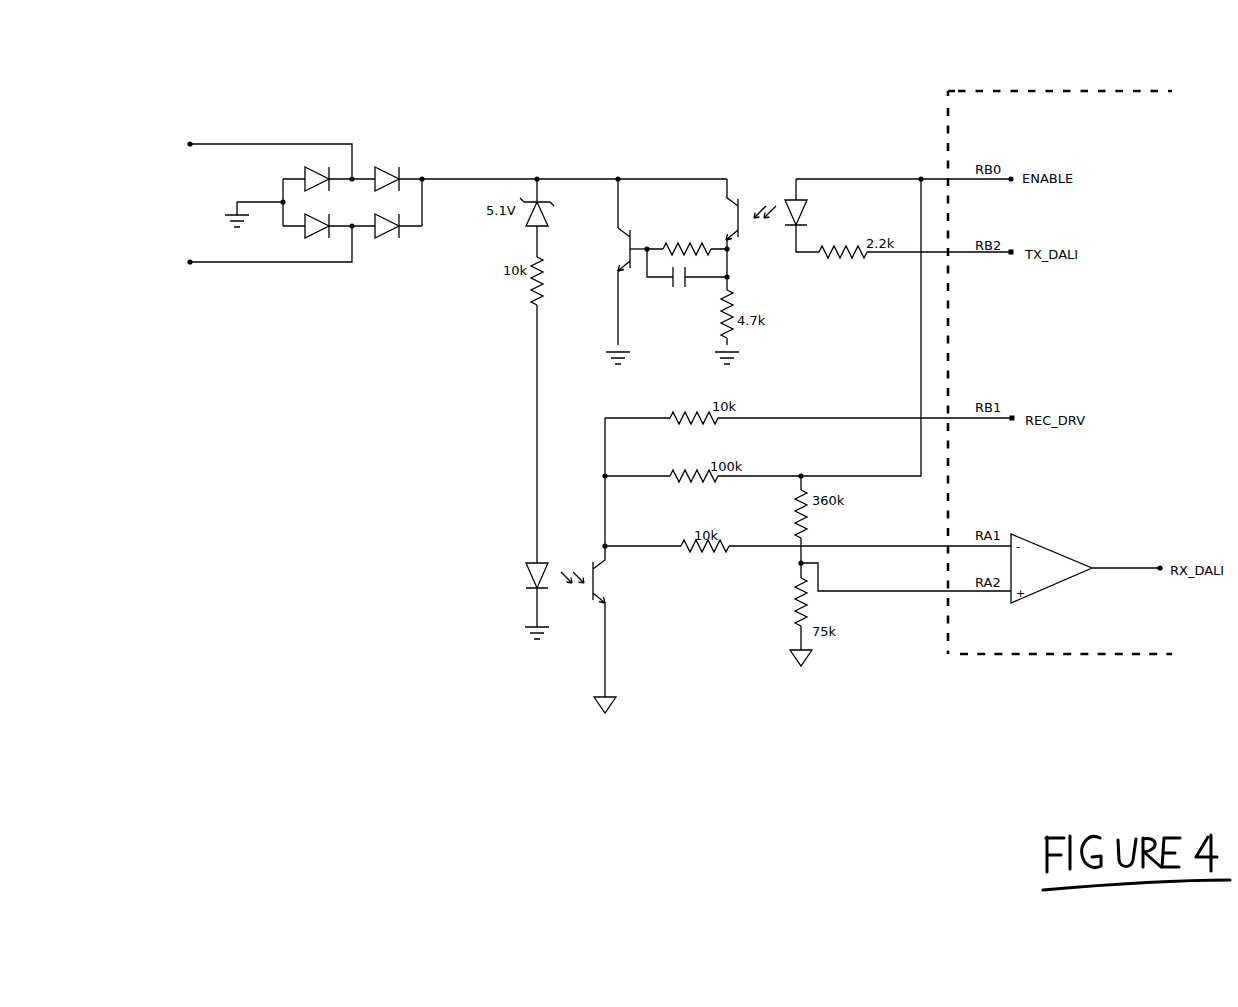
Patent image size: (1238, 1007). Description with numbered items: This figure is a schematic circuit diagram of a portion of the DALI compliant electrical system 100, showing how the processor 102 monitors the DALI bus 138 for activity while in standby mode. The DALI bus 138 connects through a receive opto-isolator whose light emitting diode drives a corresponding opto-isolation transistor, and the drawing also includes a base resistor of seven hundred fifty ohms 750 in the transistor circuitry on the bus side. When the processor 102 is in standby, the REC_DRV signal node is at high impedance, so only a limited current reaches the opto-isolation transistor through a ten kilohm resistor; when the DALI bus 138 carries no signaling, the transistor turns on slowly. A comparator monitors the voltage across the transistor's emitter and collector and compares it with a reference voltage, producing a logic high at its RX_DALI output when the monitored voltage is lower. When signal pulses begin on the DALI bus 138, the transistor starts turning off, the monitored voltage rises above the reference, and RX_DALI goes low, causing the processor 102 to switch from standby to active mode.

The DALI bus 138 is at (162, 196).
The processor 102 is at (1088, 91).
The 750 ohm base resistor 750 is at (687, 241).
The DALI compliant electrical system 100 is at (683, 279).